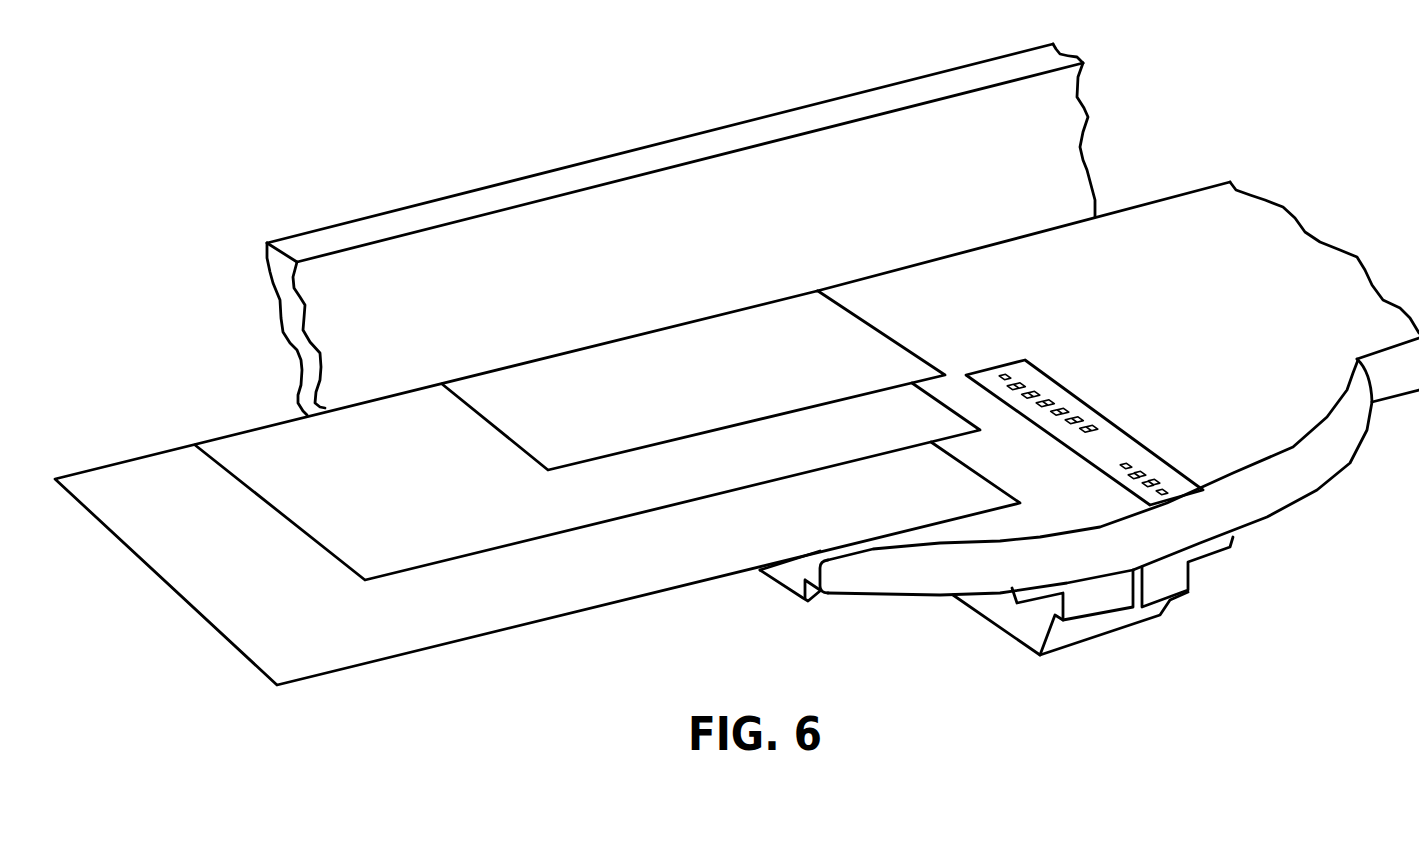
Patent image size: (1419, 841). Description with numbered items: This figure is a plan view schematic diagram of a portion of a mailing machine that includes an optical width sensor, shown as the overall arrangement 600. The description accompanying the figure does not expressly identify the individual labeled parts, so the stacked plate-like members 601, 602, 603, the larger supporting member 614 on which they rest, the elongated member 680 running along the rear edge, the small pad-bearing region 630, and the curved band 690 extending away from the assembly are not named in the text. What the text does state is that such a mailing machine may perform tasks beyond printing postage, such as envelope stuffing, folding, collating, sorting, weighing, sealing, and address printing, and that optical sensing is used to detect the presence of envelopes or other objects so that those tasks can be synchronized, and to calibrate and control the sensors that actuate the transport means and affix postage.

The electronic assembly 600 is at (452, 92).
The first layer 601 is at (551, 518).
The second layer 602 is at (648, 413).
The third layer 603 is at (388, 636).
The substrate 614 is at (1168, 233).
The connector contact pad area 630 is at (993, 375).
The edge member 680 is at (753, 180).
The flexible cable 690 is at (1142, 433).